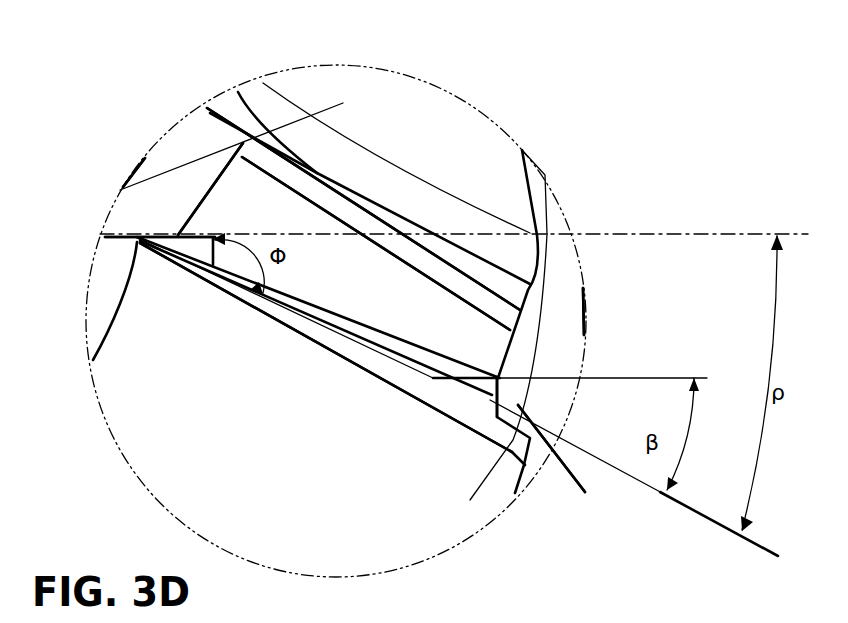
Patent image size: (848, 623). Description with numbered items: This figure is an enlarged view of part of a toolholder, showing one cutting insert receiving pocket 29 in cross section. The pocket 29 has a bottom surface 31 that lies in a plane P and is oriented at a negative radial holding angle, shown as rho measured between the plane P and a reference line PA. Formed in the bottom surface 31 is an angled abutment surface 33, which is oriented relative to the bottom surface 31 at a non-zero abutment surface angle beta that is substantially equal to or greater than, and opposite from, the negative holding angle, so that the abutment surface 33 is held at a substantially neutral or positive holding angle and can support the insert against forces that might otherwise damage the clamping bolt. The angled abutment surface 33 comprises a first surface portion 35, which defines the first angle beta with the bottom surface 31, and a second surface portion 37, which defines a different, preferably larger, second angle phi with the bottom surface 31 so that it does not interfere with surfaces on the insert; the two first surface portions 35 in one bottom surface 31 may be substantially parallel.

The cutting insert receiving pocket 29 is at (355, 273).
The bottom surface 31 is at (367, 345).
The angled abutment surface 33 is at (206, 224).
The first surface portion 35 is at (178, 233).
The second surface portion 37 is at (218, 262).
The reference plane PA is at (715, 233).
The plane of the bottom surface P is at (757, 540).